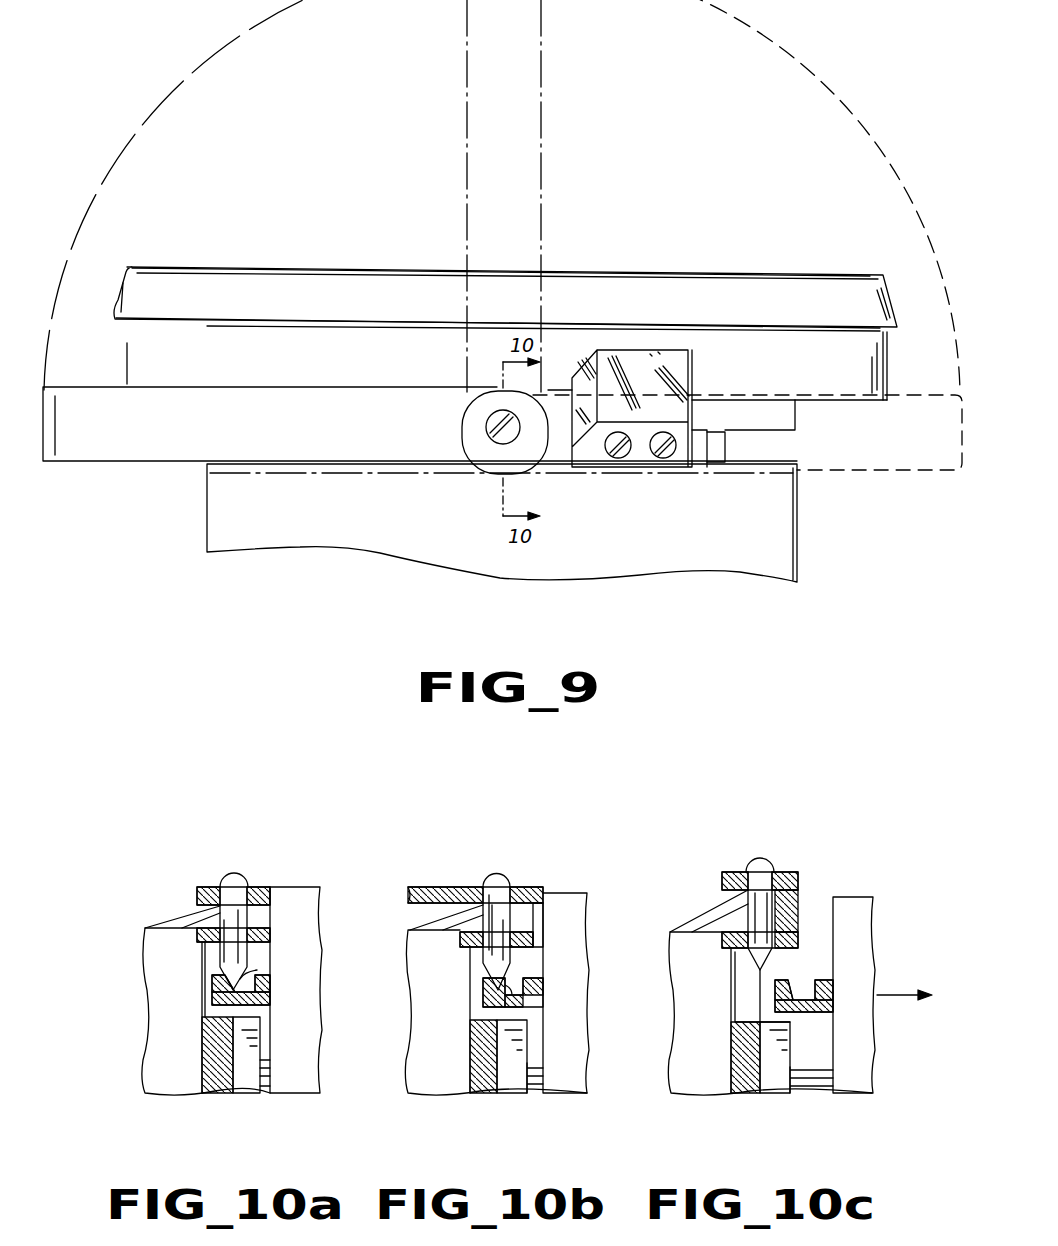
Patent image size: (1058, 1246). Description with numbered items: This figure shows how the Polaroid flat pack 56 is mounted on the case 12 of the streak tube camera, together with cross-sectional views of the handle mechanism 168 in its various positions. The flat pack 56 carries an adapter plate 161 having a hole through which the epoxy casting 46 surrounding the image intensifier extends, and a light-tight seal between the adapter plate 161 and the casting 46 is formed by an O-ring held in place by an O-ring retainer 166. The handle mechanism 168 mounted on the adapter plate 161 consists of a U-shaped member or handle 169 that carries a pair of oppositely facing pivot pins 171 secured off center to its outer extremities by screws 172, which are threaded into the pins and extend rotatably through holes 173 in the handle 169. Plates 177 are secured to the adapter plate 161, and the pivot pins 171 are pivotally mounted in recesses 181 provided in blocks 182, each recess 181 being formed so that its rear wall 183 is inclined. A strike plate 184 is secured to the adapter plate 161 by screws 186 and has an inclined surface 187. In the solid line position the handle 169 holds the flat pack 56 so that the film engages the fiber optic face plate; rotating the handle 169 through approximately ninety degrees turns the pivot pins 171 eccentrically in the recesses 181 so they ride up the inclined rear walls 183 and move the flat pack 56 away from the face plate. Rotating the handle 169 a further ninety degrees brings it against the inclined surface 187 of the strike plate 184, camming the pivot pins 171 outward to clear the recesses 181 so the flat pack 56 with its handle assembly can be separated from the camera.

In FIG. 9, the case 12 is at (357, 555).
In FIG. 10A, the case 12 is at (310, 1102).
In FIG. 10B, the case 12 is at (570, 1104).
In FIG. 10C, the case 12 is at (856, 1106).
In FIG. 9, the casting 46 is at (697, 468).
In FIG. 10B, the casting 46 is at (536, 1090).
In FIG. 10C, the casting 46 is at (812, 1088).
In FIG. 9, the flat pack 56 is at (373, 268).
In FIG. 10A, the flat pack 56 is at (162, 1103).
In FIG. 10B, the flat pack 56 is at (441, 1105).
In FIG. 10C, the flat pack 56 is at (700, 1106).
In FIG. 9, the adapter plate 161 is at (797, 424).
In FIG. 10A, the adapter plate 161 is at (218, 1072).
In FIG. 10B, the adapter plate 161 is at (483, 1092).
In FIG. 9, the O-ring retainer 166 is at (726, 446).
In FIG. 10A, the O-ring retainer 166 is at (251, 1077).
In FIG. 10C, the O-ring retainer 166 is at (776, 1085).
In FIG. 9, the handle mechanism 168 is at (270, 255).
In FIG. 9, the U-shaped member or handle 169 is at (467, 135).
In FIG. 10A, the U-shaped member or handle 169 is at (203, 885).
In FIG. 10B, the U-shaped member or handle 169 is at (440, 887).
In FIG. 10C, the U-shaped member or handle 169 is at (730, 870).
In FIG. 10A, the pivot pins 171 is at (228, 950).
In FIG. 10B, the pivot pins 171 is at (492, 955).
In FIG. 10C, the pivot pins 171 is at (752, 962).
In FIG. 9, the screws 172 is at (503, 443).
In FIG. 10A, the screws 172 is at (235, 878).
In FIG. 10B, the screws 172 is at (497, 878).
In FIG. 10C, the screws 172 is at (770, 865).
In FIG. 10B, the holes 173 is at (511, 886).
In FIG. 10B, the plates 177 is at (540, 938).
In FIG. 10C, the plates 177 is at (800, 940).
In FIG. 10A, the recesses 181 is at (257, 972).
In FIG. 10A, the blocks 182 is at (272, 992).
In FIG. 10B, the blocks 182 is at (545, 1000).
In FIG. 10C, the blocks 182 is at (832, 1000).
In FIG. 10B, the rear wall 183 is at (500, 998).
In FIG. 9, the strike plate 184 is at (655, 350).
In FIG. 10A, the strike plate 184 is at (270, 885).
In FIG. 9, the screws 186 is at (663, 458).
In FIG. 9, the inclined surface 187 is at (573, 370).
In FIG. 10A, the inclined surface 187 is at (188, 915).
In FIG. 10B, the inclined surface 187 is at (446, 917).
In FIG. 10C, the inclined surface 187 is at (722, 913).